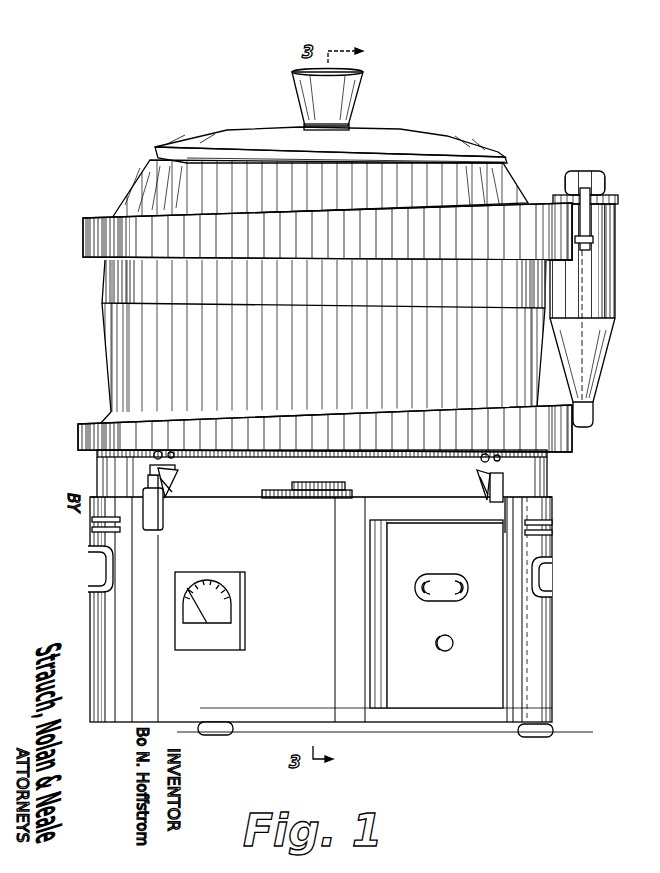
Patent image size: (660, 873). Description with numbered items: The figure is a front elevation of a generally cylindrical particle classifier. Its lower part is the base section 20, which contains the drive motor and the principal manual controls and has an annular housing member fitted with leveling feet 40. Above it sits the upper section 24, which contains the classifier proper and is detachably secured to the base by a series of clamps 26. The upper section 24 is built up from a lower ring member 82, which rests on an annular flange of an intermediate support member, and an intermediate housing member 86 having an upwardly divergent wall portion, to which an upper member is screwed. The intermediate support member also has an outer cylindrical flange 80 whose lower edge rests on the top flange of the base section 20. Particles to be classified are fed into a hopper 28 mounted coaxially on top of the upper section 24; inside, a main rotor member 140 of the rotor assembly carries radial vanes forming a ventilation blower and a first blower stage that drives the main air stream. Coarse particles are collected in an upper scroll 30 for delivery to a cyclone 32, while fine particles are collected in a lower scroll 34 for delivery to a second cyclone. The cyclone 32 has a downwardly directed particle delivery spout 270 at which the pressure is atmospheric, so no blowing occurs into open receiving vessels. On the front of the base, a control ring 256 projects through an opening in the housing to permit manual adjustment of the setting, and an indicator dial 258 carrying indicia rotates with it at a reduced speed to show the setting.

The base section 20 is at (326, 559).
The upper section 24 is at (100, 331).
The clamps 26 is at (170, 482).
The hopper 28 is at (307, 100).
The upper scroll 30 is at (283, 216).
The cyclone 32 is at (605, 299).
The lower scroll 34 is at (282, 425).
The leveling feet 40 is at (220, 724).
The outer cylindrical flange 80 is at (547, 499).
The lower ring member 82 is at (208, 460).
The intermediate housing member 86 is at (107, 381).
The main rotor member 140 is at (165, 527).
The control ring 256 is at (312, 500).
The indicator dial 258 is at (305, 482).
The particle delivery spout 270 is at (593, 406).